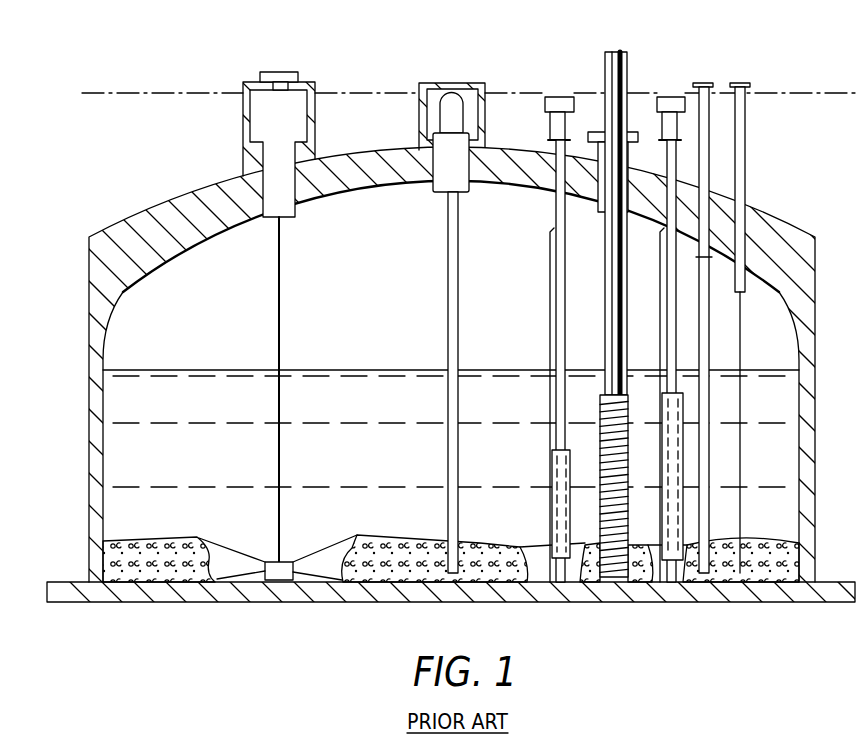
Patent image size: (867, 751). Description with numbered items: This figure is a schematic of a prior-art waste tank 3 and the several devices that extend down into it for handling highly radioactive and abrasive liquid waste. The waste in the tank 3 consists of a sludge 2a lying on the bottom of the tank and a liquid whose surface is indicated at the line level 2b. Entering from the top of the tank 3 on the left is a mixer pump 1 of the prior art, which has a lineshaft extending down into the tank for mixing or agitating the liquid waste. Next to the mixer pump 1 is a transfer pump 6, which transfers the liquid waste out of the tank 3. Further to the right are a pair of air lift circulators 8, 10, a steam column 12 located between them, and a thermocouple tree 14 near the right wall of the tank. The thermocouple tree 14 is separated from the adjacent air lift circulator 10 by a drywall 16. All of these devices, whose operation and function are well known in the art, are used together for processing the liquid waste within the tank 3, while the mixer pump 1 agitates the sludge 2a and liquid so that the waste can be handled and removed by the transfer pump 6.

The waste tank 3 is at (58, 212).
The mixer pump 1 is at (275, 330).
The sludge 2a is at (150, 535).
The line level 2b is at (313, 370).
The transfer pump 6 is at (445, 448).
The air lift circulator 8 is at (548, 326).
The air lift circulator 10 is at (662, 312).
The steam column 12 is at (628, 477).
The thermocouple tree 14 is at (742, 357).
The drywall 16 is at (706, 483).